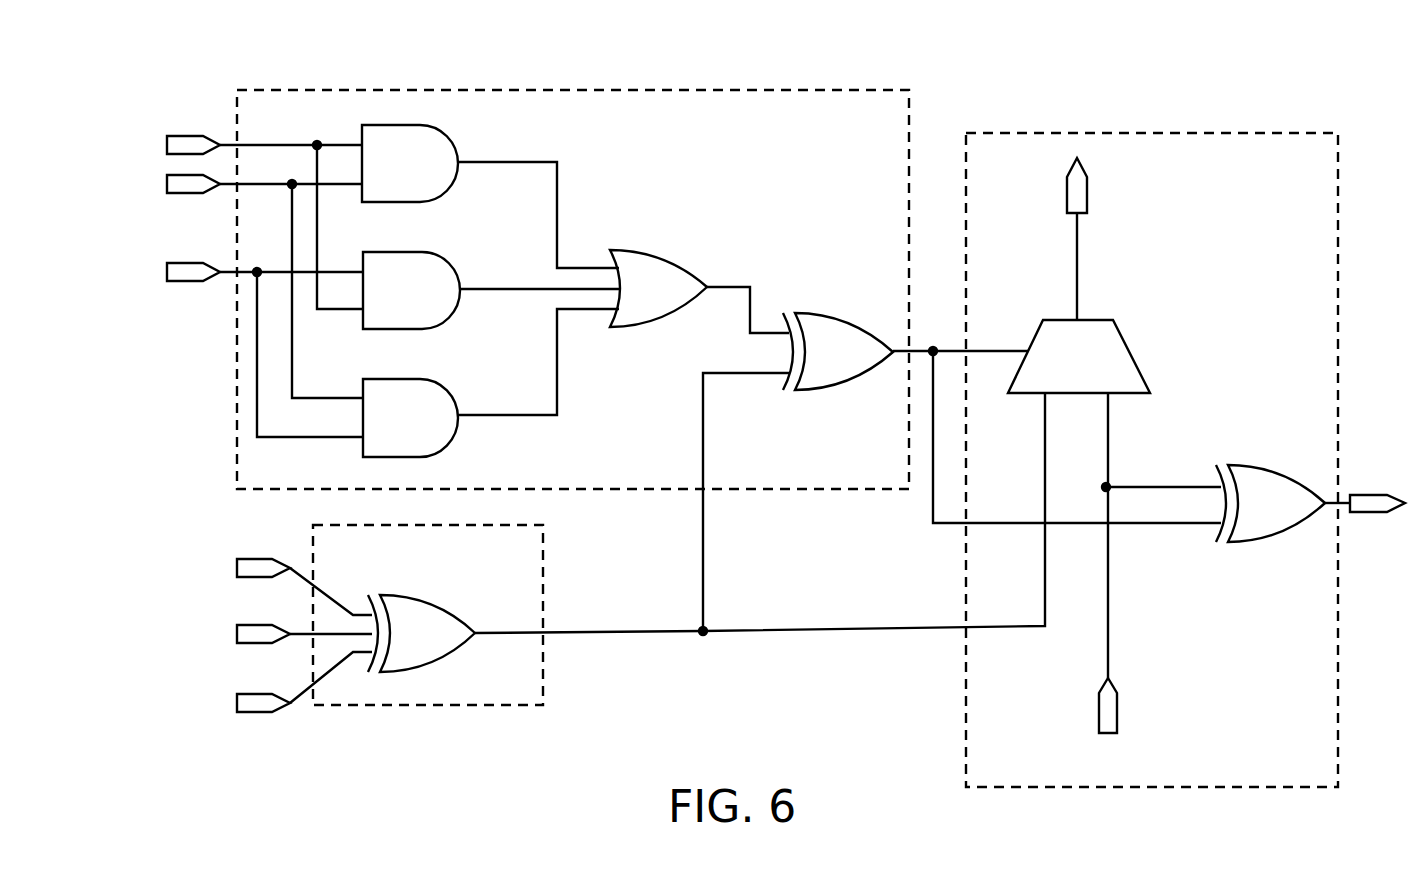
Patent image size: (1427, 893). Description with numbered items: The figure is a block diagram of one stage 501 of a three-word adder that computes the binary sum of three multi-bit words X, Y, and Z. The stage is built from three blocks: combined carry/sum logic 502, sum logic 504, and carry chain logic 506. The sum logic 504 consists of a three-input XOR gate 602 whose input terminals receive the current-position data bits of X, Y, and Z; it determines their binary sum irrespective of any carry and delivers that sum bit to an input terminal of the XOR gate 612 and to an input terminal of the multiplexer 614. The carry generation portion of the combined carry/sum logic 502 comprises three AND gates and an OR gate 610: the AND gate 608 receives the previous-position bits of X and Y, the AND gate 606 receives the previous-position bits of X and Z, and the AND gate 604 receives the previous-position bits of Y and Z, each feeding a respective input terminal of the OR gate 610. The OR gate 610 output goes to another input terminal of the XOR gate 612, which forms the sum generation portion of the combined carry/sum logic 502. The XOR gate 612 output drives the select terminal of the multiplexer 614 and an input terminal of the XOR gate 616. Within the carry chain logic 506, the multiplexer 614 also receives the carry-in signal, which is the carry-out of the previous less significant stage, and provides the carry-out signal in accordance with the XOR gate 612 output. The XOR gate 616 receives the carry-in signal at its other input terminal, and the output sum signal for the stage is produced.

The stage 501 is at (601, 875).
The combined carry/sum logic 502 is at (732, 89).
The sum logic 504 is at (467, 705).
The carry chain logic 506 is at (1022, 787).
The XOR gate 602 is at (400, 593).
The AND gate 604 is at (438, 448).
The AND gate 606 is at (435, 330).
The AND gate 608 is at (453, 142).
The OR gate 610 is at (628, 248).
The XOR gate 612 is at (808, 310).
The multiplexer 614 is at (1062, 319).
The XOR gate 616 is at (1240, 543).